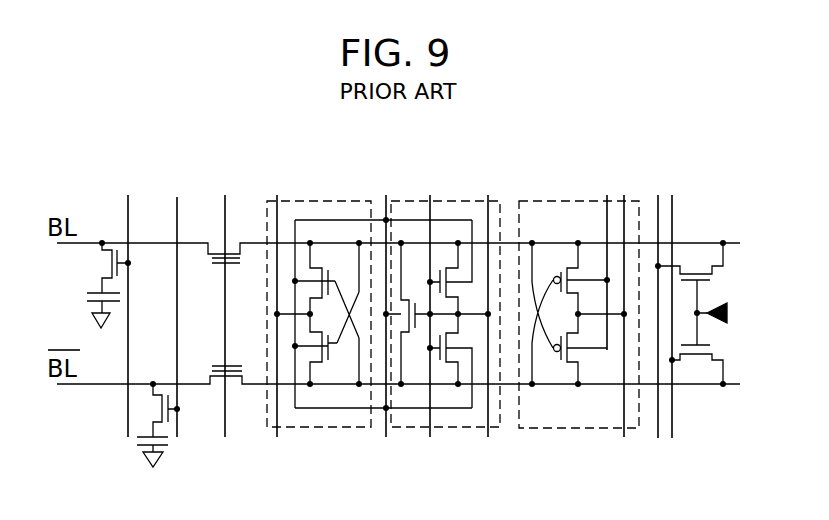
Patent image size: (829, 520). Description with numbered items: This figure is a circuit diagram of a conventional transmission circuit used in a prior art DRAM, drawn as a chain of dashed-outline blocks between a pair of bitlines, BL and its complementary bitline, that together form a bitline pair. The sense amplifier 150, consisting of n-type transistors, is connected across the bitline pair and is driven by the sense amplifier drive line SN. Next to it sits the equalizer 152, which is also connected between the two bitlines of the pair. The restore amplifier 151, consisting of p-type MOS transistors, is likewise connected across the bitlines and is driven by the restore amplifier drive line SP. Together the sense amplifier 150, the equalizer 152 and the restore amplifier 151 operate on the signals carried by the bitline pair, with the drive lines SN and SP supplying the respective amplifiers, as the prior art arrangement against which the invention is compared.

The sense amplifier 150 is at (335, 428).
The restore amplifier 151 is at (557, 428).
The equalizer 152 is at (460, 428).